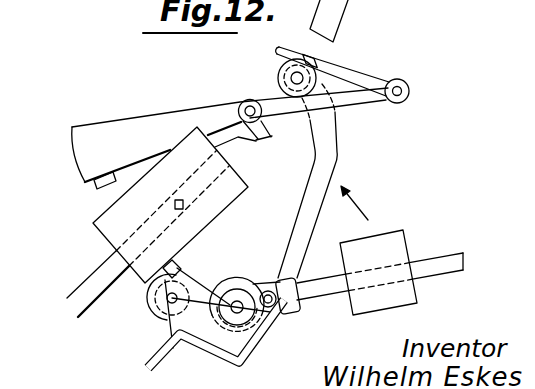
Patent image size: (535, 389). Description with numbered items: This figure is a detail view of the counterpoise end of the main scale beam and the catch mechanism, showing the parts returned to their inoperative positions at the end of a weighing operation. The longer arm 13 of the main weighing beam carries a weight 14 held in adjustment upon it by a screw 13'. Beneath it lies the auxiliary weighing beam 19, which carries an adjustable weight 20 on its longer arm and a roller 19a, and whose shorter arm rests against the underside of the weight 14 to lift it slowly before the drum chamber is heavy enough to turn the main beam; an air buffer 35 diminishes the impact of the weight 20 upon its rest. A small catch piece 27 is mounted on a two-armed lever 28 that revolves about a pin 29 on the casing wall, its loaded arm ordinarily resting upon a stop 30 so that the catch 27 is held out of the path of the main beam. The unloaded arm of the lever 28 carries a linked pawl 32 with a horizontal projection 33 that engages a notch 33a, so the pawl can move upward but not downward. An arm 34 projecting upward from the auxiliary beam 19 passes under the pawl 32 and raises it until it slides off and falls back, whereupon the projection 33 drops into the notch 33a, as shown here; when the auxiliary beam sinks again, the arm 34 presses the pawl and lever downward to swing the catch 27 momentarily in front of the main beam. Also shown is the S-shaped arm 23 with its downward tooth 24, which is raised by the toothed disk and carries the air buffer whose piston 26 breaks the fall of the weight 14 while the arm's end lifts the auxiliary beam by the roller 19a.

The longer arm of main weighing beam 13 is at (124, 233).
The screw 13' is at (166, 192).
The weight 14 is at (106, 233).
The auxiliary weighing beam 19 is at (448, 253).
The roller 19a is at (292, 311).
The adjustable weight 20 is at (389, 233).
The S-shaped arm 23 is at (180, 350).
The tooth 24 is at (247, 364).
The piston 26 is at (180, 266).
The catch piece 27 is at (266, 133).
The two-armed lever 28 is at (137, 123).
The pin 29 is at (250, 99).
The stop 30 is at (99, 187).
The pawl 32 is at (366, 75).
The horizontal projection 33 is at (318, 60).
The notch 33a is at (330, 107).
The arm 34 is at (333, 152).
The air buffer 35 is at (354, 21).